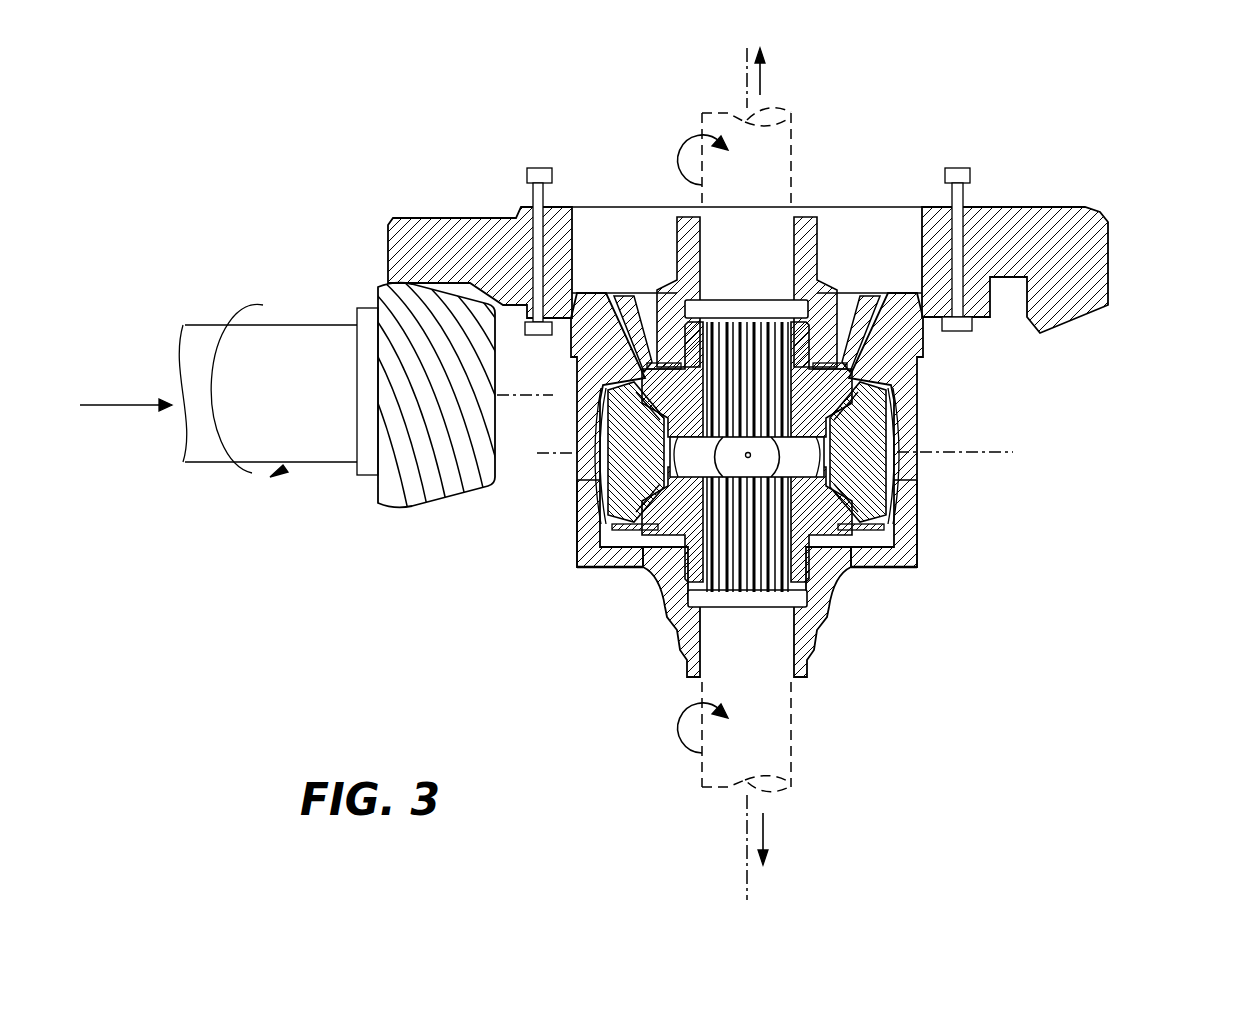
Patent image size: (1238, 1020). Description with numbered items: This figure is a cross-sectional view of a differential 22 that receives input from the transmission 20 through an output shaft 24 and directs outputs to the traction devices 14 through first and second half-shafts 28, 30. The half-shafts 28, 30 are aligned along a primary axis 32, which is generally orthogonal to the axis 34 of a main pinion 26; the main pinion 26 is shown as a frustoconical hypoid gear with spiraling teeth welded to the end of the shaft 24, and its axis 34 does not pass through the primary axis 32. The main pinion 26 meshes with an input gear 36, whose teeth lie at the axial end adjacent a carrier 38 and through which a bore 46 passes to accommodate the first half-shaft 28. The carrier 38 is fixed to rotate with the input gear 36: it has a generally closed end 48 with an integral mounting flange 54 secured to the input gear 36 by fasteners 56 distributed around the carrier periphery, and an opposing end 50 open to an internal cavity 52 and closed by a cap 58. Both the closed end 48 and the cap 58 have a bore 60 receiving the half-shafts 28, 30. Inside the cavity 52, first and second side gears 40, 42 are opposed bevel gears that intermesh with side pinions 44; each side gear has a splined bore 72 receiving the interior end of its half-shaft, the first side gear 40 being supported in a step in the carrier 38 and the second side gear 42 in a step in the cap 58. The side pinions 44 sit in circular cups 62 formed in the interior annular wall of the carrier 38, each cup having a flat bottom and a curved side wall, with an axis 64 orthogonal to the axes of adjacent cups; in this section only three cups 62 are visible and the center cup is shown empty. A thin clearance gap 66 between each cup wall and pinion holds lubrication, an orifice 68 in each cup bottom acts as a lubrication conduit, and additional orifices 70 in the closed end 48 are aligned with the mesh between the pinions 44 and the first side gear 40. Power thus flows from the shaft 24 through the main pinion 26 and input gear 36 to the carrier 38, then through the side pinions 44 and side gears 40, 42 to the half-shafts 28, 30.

The traction devices 14 is at (775, 456).
The transmission 20 is at (126, 429).
The differential 22 is at (652, 474).
The output shaft 24 is at (244, 405).
The main pinion 26 is at (439, 402).
The first half-shaft 28 is at (795, 157).
The second half-shaft 30 is at (795, 728).
The primary axis 32 is at (750, 900).
The axis of main pinion 34 is at (546, 392).
The input gear 36 is at (452, 263).
The carrier 38 is at (584, 360).
The first side gear 40 is at (673, 413).
The second side gear 42 is at (673, 529).
The side pinions 44 is at (622, 463).
The bore 46 is at (568, 232).
The closed end 48 is at (957, 348).
The opposing end 50 is at (945, 559).
The internal cavity 52 is at (650, 559).
The mounting flange 54 is at (988, 330).
The fasteners 56 is at (537, 203).
The cap 58 is at (818, 575).
The bore 60 is at (791, 255).
The cups 62 is at (600, 505).
The axis of cup 64 is at (752, 456).
The clearance gap 66 is at (628, 538).
The orifice 68 is at (724, 464).
The additional orifices 70 is at (628, 338).
The splined bore 72 is at (707, 572).